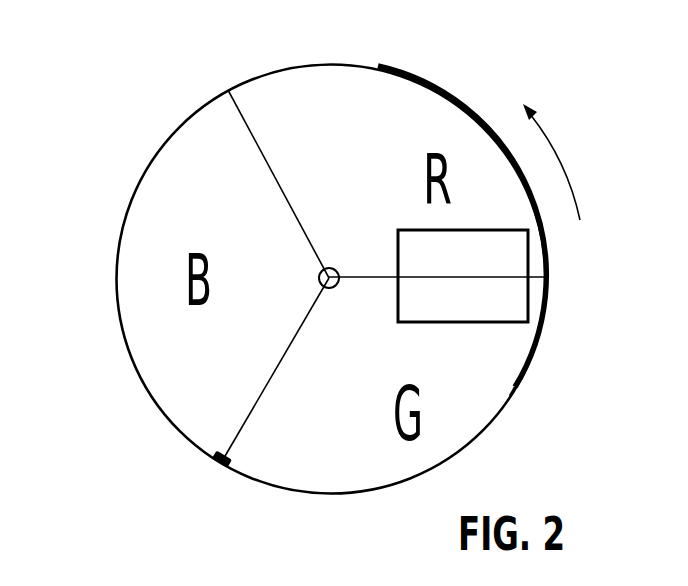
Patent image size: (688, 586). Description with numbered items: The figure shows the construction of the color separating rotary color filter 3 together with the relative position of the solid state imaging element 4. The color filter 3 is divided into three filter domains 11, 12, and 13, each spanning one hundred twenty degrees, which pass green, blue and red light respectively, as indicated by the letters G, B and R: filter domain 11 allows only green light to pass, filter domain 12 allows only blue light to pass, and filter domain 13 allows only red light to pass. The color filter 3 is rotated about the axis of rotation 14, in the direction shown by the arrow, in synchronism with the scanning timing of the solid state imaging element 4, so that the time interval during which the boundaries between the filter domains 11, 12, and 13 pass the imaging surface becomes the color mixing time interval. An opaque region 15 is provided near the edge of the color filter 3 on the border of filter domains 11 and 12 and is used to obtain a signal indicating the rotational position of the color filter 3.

The rotary color filter 3 is at (248, 80).
The solid state imaging element 4 is at (528, 300).
The filter domain 11 is at (515, 387).
The filter domain 12 is at (130, 359).
The filter domain 13 is at (378, 67).
The axis of rotation 14 is at (320, 270).
The opaque region 15 is at (215, 461).